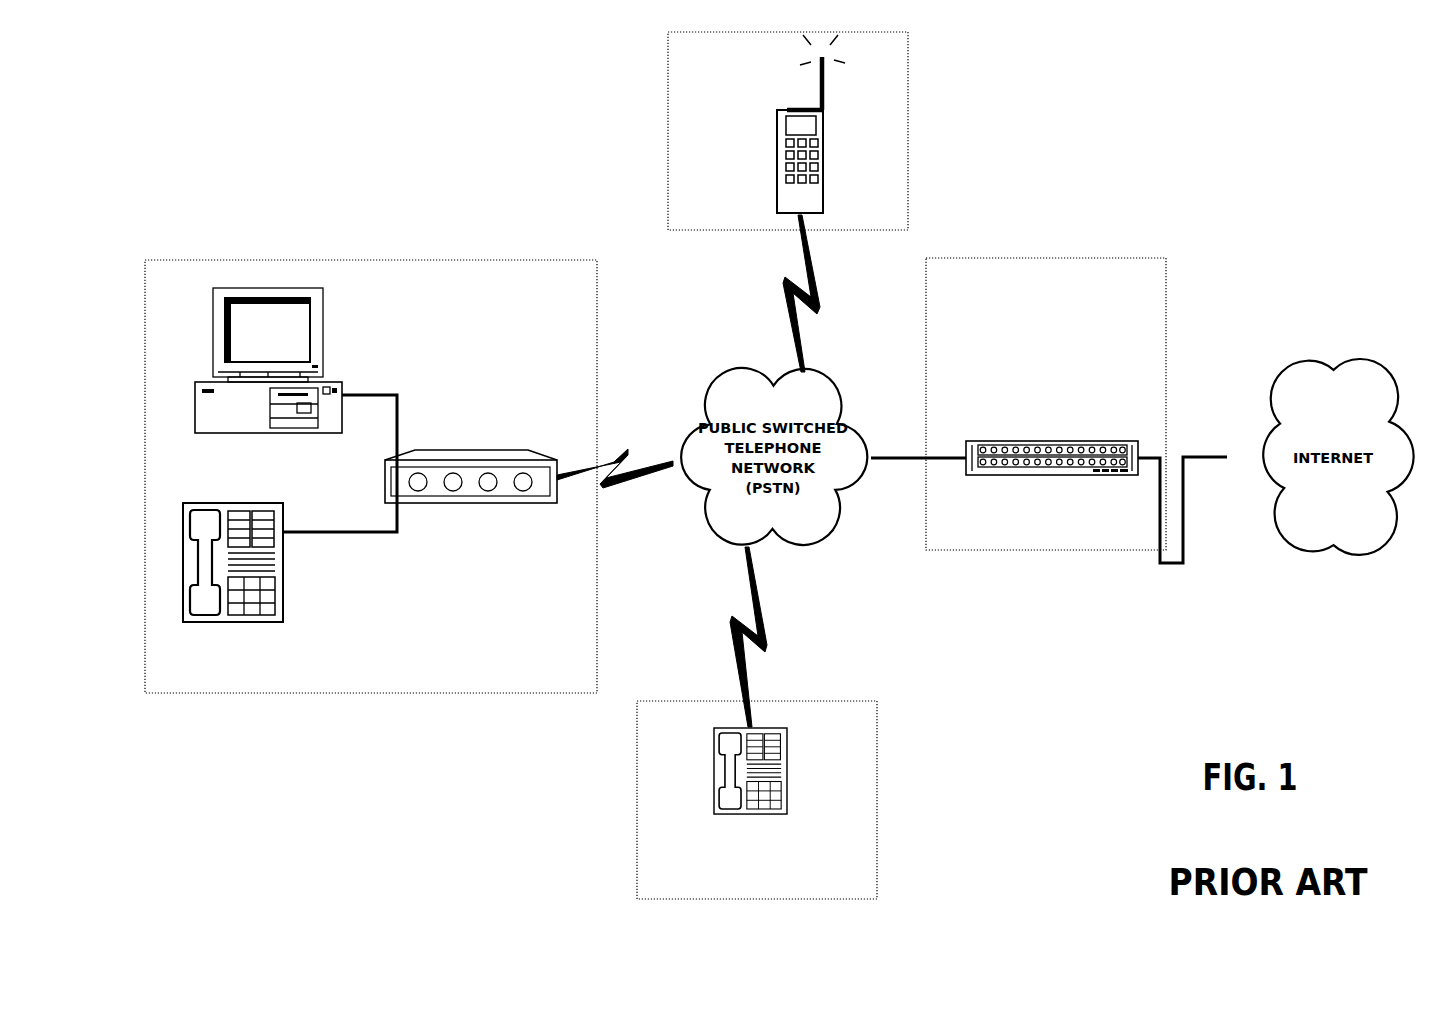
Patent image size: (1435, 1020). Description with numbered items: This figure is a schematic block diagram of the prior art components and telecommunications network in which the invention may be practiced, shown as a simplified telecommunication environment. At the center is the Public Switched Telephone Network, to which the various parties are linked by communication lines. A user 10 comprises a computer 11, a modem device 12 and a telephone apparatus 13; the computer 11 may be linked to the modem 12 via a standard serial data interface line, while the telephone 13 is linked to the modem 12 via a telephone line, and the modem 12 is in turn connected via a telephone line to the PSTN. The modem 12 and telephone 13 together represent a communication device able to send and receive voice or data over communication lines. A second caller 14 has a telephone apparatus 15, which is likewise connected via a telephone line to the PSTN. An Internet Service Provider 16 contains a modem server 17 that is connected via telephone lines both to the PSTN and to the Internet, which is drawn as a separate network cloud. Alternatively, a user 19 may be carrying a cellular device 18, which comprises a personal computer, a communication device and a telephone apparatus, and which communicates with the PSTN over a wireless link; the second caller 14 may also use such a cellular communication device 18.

The user 10 is at (564, 260).
The computer 11 is at (323, 315).
The modem device 12 is at (467, 450).
The telephone apparatus 13 is at (283, 504).
The second caller 14 is at (806, 701).
The telephone apparatus 15 is at (787, 766).
The Internet Service Provider 16 is at (1133, 258).
The modem server 17 is at (1050, 441).
The cellular telephone 18 is at (823, 160).
The user 19 is at (668, 133).